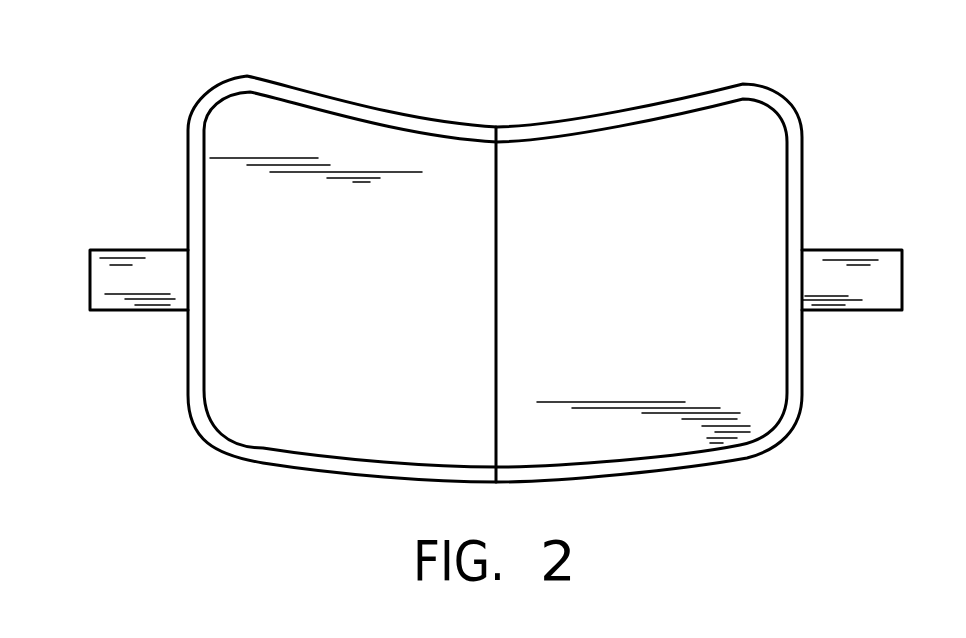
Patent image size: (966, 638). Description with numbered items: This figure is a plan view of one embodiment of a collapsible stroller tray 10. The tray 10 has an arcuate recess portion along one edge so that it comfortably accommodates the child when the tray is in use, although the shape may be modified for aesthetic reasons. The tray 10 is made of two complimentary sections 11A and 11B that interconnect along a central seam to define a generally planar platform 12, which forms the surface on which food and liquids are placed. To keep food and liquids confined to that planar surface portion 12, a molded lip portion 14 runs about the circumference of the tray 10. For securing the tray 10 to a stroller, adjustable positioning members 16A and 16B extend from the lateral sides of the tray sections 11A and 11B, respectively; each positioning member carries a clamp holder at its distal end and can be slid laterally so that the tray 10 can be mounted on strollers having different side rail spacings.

The tray 10 is at (486, 257).
The complimentary section 11A is at (380, 113).
The complimentary section 11B is at (725, 86).
The planar platform 12 is at (588, 303).
The molded lip portion 14 is at (790, 113).
The adjustable positioning member 16A is at (123, 298).
The adjustable positioning member 16B is at (860, 300).